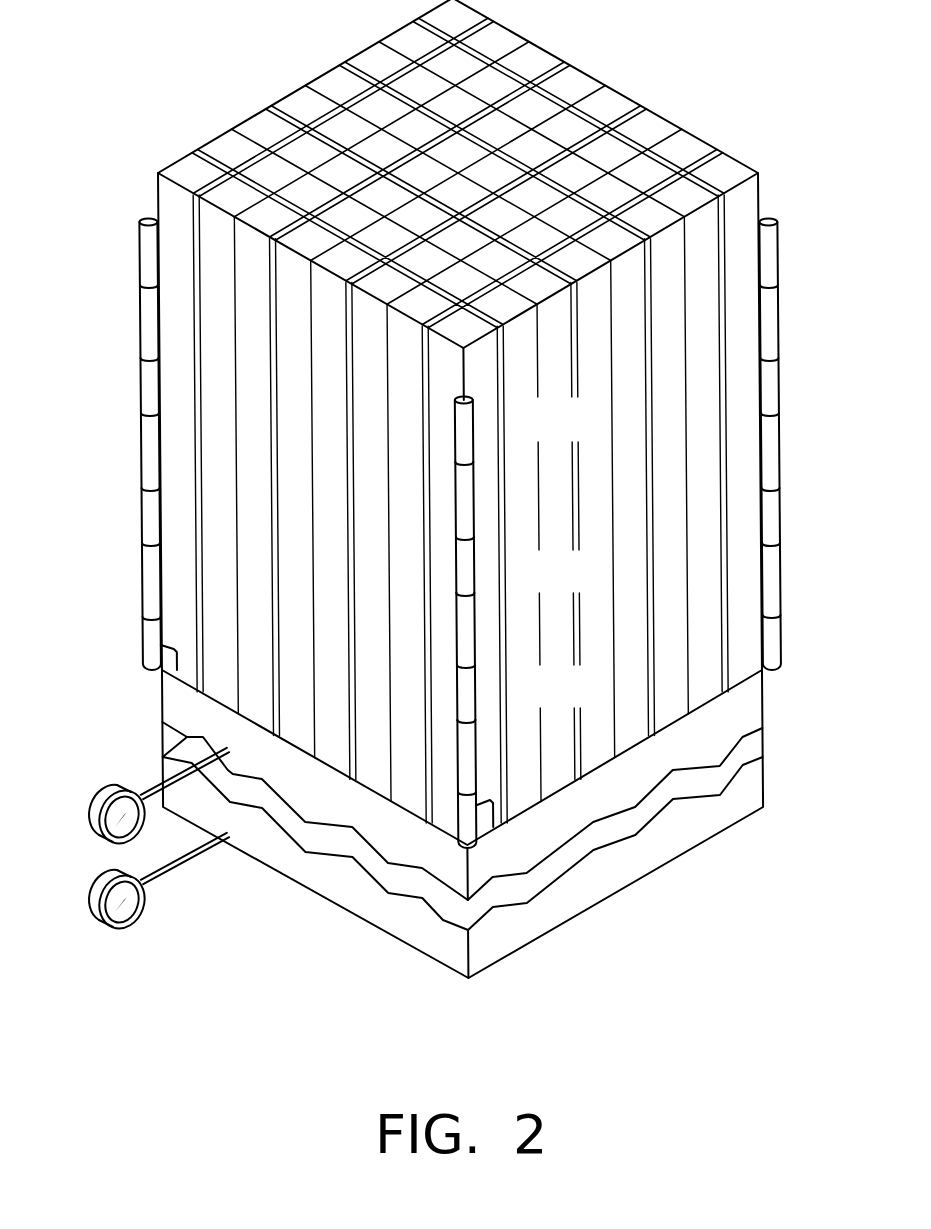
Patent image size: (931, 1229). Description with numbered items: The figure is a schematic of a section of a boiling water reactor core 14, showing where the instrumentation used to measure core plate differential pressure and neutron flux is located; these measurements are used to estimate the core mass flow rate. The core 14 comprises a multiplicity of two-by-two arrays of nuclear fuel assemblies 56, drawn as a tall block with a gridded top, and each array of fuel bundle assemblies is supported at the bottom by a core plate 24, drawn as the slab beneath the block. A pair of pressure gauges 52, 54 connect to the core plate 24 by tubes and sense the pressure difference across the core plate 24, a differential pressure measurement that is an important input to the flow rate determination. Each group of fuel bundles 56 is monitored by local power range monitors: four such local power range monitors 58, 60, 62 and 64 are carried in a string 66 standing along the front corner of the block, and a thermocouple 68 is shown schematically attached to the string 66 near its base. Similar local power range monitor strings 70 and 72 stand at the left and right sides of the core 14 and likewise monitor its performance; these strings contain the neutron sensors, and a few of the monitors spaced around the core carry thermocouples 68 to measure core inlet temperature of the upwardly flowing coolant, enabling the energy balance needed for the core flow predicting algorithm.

The core 14 is at (676, 110).
The core plate 24 is at (640, 803).
The pressure gauge 52 is at (97, 900).
The pressure gauge 54 is at (97, 806).
The nuclear fuel assemblies 56 is at (540, 63).
The local power range monitor 58 is at (476, 795).
The local power range monitor 60 is at (476, 690).
The local power range monitor 62 is at (474, 580).
The local power range monitor 64 is at (474, 428).
The string 66 is at (445, 770).
The thermocouple 68 is at (483, 825).
The local power range monitor string 70 is at (132, 592).
The local power range monitor string 72 is at (790, 592).